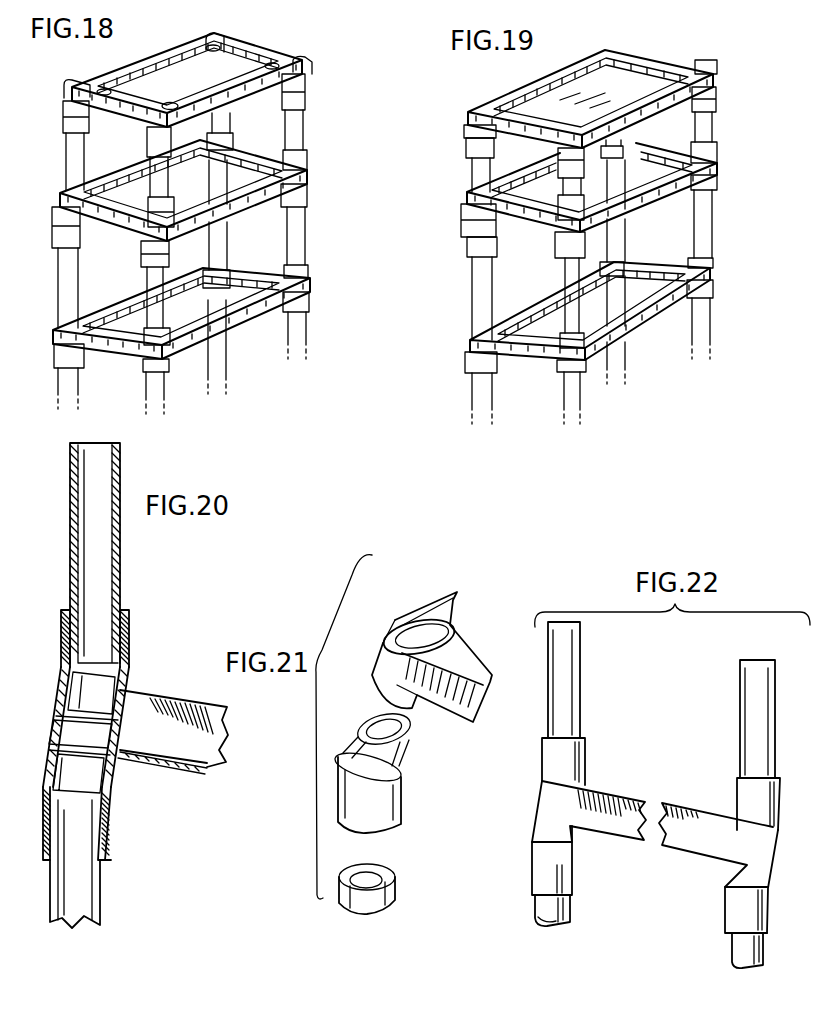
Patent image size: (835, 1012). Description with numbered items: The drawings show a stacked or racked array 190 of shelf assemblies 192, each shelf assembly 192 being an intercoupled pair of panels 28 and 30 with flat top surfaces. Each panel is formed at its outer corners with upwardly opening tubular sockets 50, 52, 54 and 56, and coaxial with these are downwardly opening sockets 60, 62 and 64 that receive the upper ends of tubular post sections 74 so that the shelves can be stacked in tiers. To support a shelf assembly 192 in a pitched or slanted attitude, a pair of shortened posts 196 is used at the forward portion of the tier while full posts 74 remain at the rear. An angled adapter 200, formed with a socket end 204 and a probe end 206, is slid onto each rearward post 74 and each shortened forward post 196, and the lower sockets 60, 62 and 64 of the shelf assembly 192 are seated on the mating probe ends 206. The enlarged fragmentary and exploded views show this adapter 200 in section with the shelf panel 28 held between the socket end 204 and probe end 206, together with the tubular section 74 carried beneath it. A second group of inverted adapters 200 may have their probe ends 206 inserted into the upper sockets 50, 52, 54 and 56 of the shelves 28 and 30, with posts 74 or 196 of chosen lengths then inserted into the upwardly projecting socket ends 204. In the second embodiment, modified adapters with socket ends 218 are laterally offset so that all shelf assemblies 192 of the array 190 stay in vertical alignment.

In FIG. 18, the panel 28 is at (131, 70).
In FIG. 19, the panel 28 is at (531, 104).
In FIG. 20, the panel 28 is at (196, 716).
In FIG. 21, the panel 28 is at (468, 647).
In FIG. 18, the panel 30 is at (245, 68).
In FIG. 19, the panel 30 is at (659, 70).
In FIG. 18, the tubular socket 50 is at (174, 107).
In FIG. 18, the tubular socket 52 is at (90, 80).
In FIG. 21, the tubular socket 52 is at (398, 616).
In FIG. 18, the tubular socket 54 is at (303, 58).
In FIG. 18, the tubular socket 56 is at (222, 33).
In FIG. 18, the downwardly opening socket 60 is at (147, 137).
In FIG. 22, the downwardly opening socket 60 is at (722, 868).
In FIG. 18, the downwardly opening socket 62 is at (67, 103).
In FIG. 19, the downwardly opening socket 62 is at (466, 227).
In FIG. 21, the downwardly opening socket 62 is at (372, 676).
In FIG. 22, the downwardly opening socket 62 is at (540, 835).
In FIG. 18, the downwardly opening socket 64 is at (307, 87).
In FIG. 18, the tubular section 74 is at (55, 308).
In FIG. 19, the tubular section 74 is at (478, 322).
In FIG. 21, the tubular section 74 is at (395, 891).
In FIG. 22, the tubular section 74 is at (572, 915).
In FIG. 18, the racked array 190 is at (320, 212).
In FIG. 18, the shelf assembly 192 is at (308, 168).
In FIG. 19, the shelf assembly 192 is at (585, 100).
In FIG. 18, the shortened post 196 is at (293, 123).
In FIG. 19, the shortened post 196 is at (714, 125).
In FIG. 20, the shortened post 196 is at (120, 520).
In FIG. 22, the shortened post 196 is at (582, 644).
In FIG. 18, the angled adapter 200 is at (45, 234).
In FIG. 18, the socket end 204 is at (177, 204).
In FIG. 20, the socket end 204 is at (128, 612).
In FIG. 21, the socket end 204 is at (405, 788).
In FIG. 22, the socket end 204 is at (587, 750).
In FIG. 20, the probe end 206 is at (132, 690).
In FIG. 21, the probe end 206 is at (405, 748).
In FIG. 19, the socket end 218 is at (718, 103).